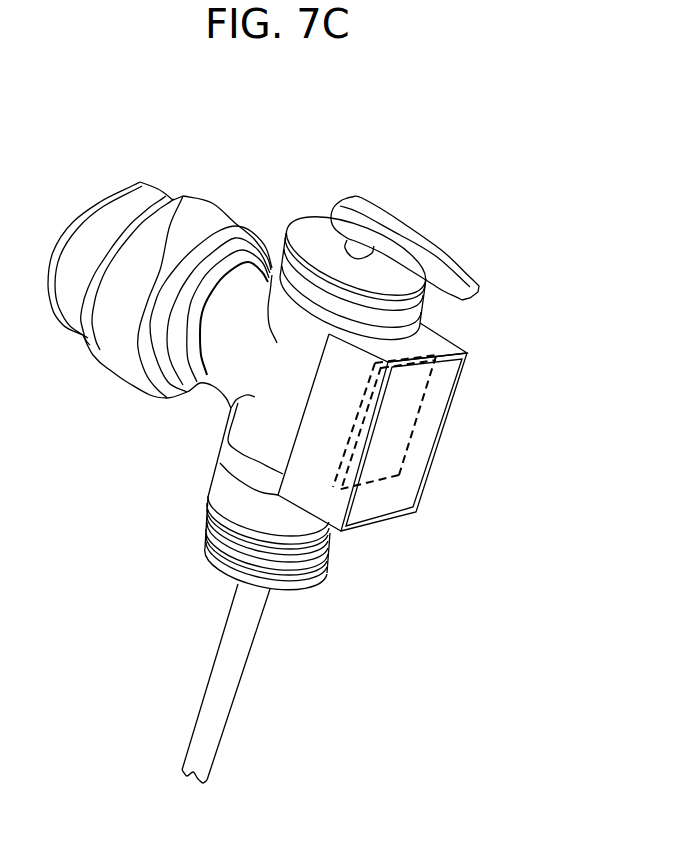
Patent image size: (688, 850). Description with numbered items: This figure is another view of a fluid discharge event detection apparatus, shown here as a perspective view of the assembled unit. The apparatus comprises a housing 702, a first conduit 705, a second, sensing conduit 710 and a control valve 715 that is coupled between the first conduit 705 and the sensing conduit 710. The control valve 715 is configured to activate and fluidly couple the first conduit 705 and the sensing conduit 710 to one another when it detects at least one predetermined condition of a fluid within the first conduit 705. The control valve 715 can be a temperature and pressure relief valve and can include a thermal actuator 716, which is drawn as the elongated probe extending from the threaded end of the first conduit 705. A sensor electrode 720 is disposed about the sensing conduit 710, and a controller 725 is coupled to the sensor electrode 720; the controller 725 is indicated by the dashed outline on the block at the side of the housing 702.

The housing 702 is at (257, 252).
The first conduit 705 is at (295, 592).
The sensing conduit 710 is at (83, 207).
The control valve 715 is at (413, 246).
The thermal actuator 716 is at (214, 748).
The sensor electrode 720 is at (238, 221).
The controller 725 is at (407, 426).